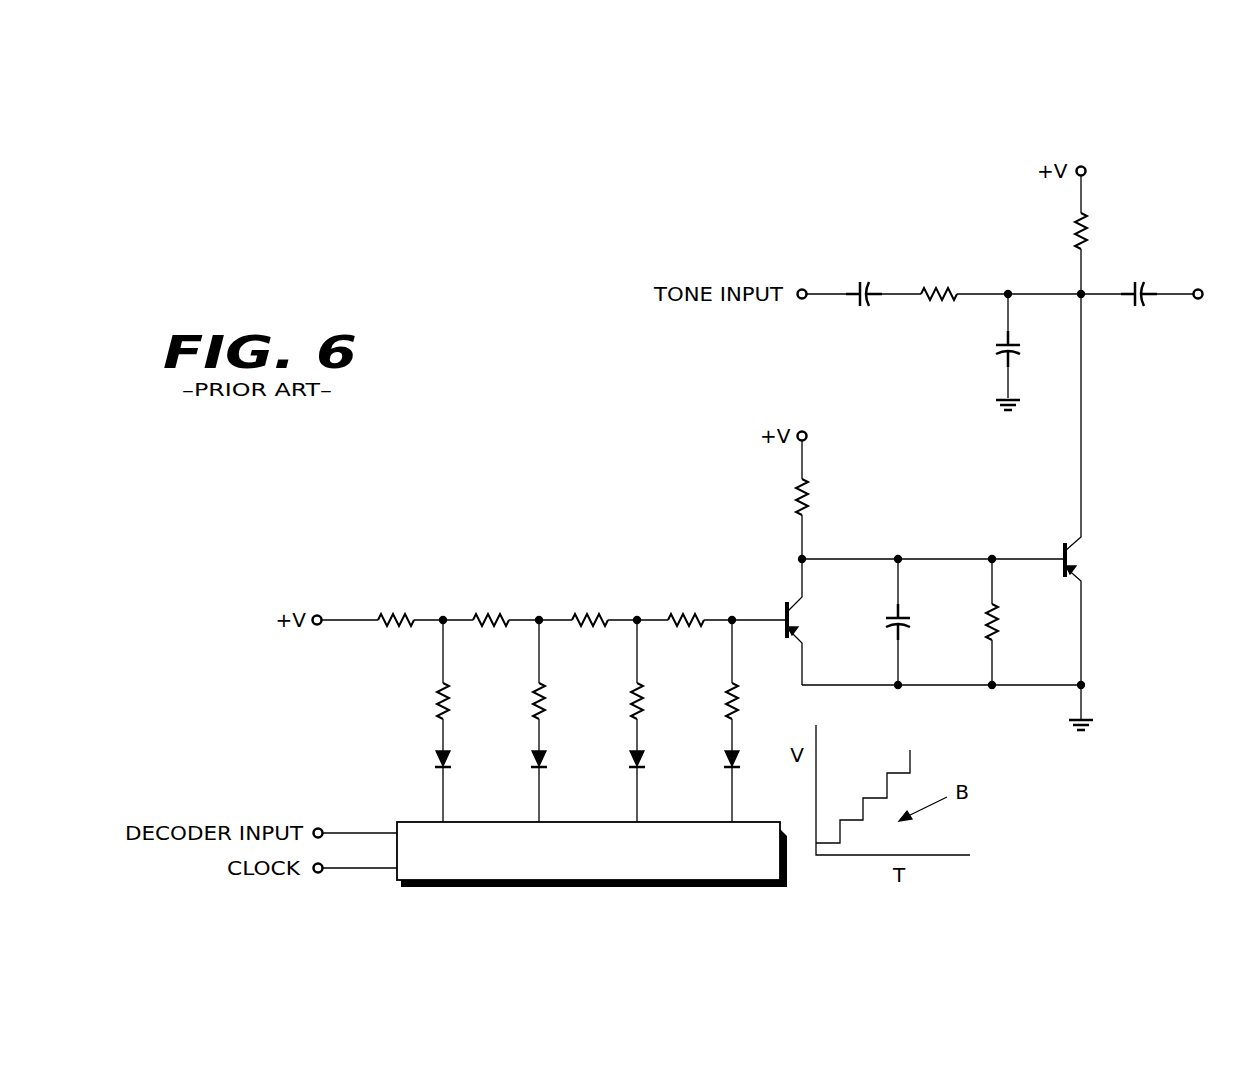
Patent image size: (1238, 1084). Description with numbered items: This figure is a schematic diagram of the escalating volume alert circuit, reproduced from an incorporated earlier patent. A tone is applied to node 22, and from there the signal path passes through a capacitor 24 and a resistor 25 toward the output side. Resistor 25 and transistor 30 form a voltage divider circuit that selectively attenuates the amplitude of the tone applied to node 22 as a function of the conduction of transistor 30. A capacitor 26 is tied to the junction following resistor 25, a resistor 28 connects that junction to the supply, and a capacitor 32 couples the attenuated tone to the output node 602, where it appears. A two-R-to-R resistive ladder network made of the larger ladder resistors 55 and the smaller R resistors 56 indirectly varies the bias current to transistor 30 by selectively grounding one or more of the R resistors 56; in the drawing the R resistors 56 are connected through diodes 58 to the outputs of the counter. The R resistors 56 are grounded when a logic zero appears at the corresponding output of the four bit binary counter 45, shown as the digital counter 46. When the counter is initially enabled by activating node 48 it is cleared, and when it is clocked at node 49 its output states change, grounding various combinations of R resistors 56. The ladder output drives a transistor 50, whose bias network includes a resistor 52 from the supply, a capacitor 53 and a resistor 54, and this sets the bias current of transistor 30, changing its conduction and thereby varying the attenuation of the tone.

The node 22 is at (803, 287).
The coupling capacitor 24 is at (870, 280).
The resistor 25 is at (942, 288).
The capacitor 26 is at (1000, 350).
The load resistor 28 is at (1090, 239).
The transistor 30 is at (1085, 562).
The output coupling capacitor 32 is at (1143, 308).
The output node 602 is at (1198, 288).
The four bit binary counter 45 is at (527, 599).
The digital counter 46 is at (600, 888).
The node 48 is at (317, 827).
The node 49 is at (318, 873).
The transistor 50 is at (804, 620).
The resistor 52 is at (796, 498).
The capacitor 53 is at (910, 621).
The resistor 54 is at (1000, 620).
The 2R resistors 55 is at (414, 618).
The R resistors 56 is at (447, 708).
The diodes 58 is at (449, 762).